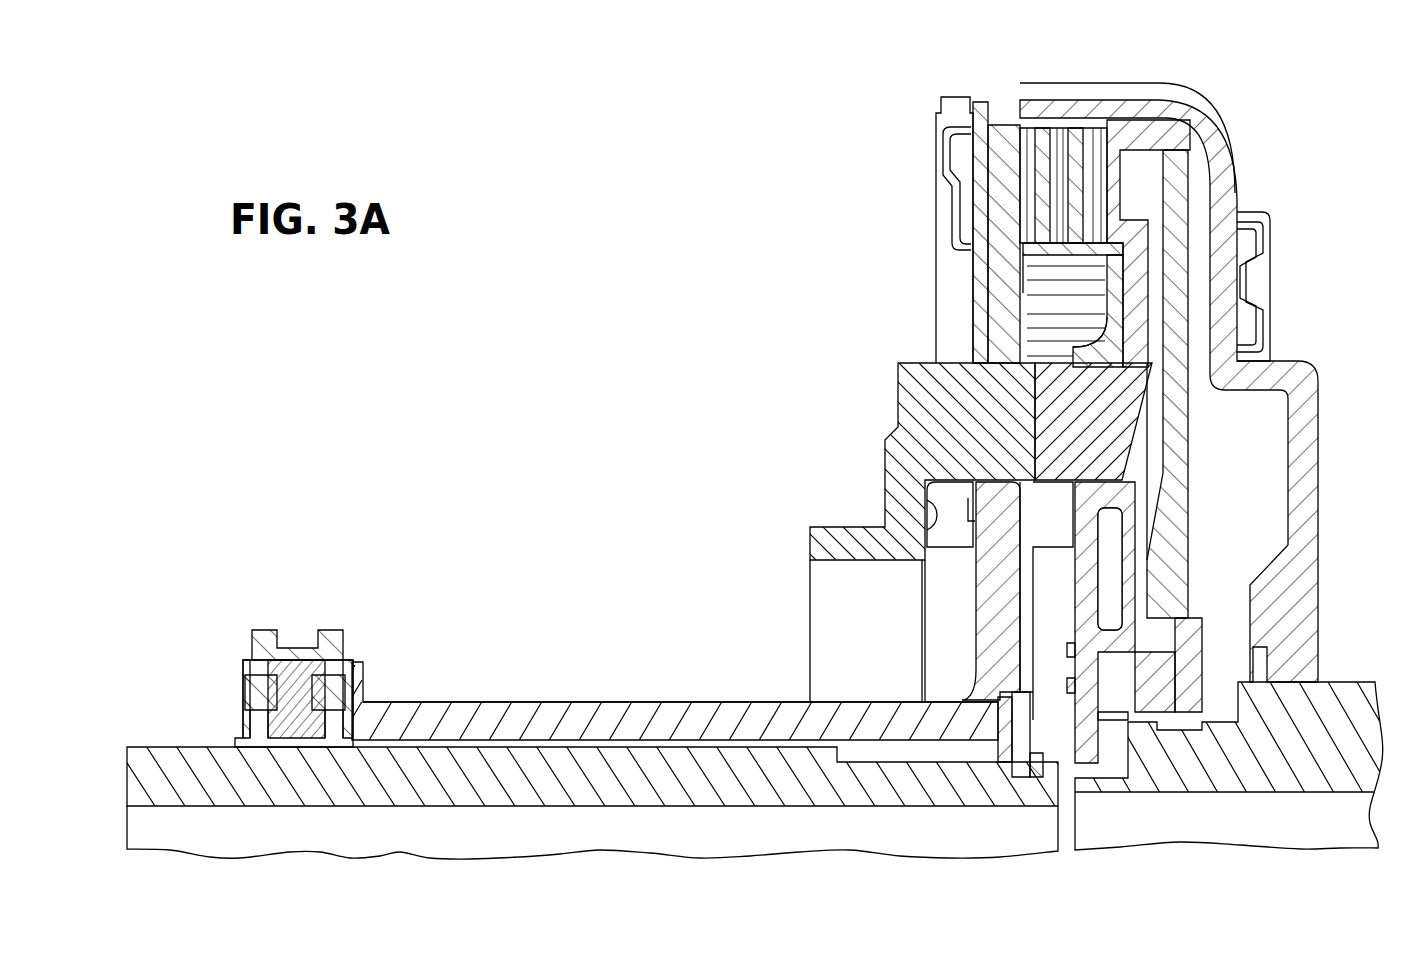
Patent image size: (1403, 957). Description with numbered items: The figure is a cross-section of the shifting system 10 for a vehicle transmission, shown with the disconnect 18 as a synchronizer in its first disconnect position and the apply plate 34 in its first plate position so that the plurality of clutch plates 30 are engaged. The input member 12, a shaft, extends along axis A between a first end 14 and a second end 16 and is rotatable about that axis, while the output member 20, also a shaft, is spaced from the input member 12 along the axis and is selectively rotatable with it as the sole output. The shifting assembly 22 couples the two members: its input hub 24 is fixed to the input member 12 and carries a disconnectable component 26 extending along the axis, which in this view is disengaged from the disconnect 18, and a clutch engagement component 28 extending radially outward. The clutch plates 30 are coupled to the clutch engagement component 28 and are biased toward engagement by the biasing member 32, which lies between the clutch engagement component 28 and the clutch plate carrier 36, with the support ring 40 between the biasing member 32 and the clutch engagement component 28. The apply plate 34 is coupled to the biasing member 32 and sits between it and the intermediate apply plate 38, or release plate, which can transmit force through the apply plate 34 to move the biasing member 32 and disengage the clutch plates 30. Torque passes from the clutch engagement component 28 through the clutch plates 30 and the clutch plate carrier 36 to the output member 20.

The shifting system 10 is at (1312, 60).
The input member 12 is at (470, 781).
The first end 14 is at (192, 781).
The second end 16 is at (1031, 796).
The disconnect 18 is at (266, 636).
The output member 20 is at (1323, 780).
The shifting assembly 22 is at (890, 178).
The input hub 24 is at (570, 720).
The disconnectable component 26 is at (405, 712).
The clutch engagement component 28 is at (1005, 290).
The plurality of clutch plates 30 is at (1043, 127).
The biasing member 32 is at (1180, 203).
The apply plate 34 is at (1110, 405).
The clutch plate carrier 36 is at (1302, 388).
The intermediate apply plate 38 is at (945, 458).
The support ring 40 is at (1073, 347).